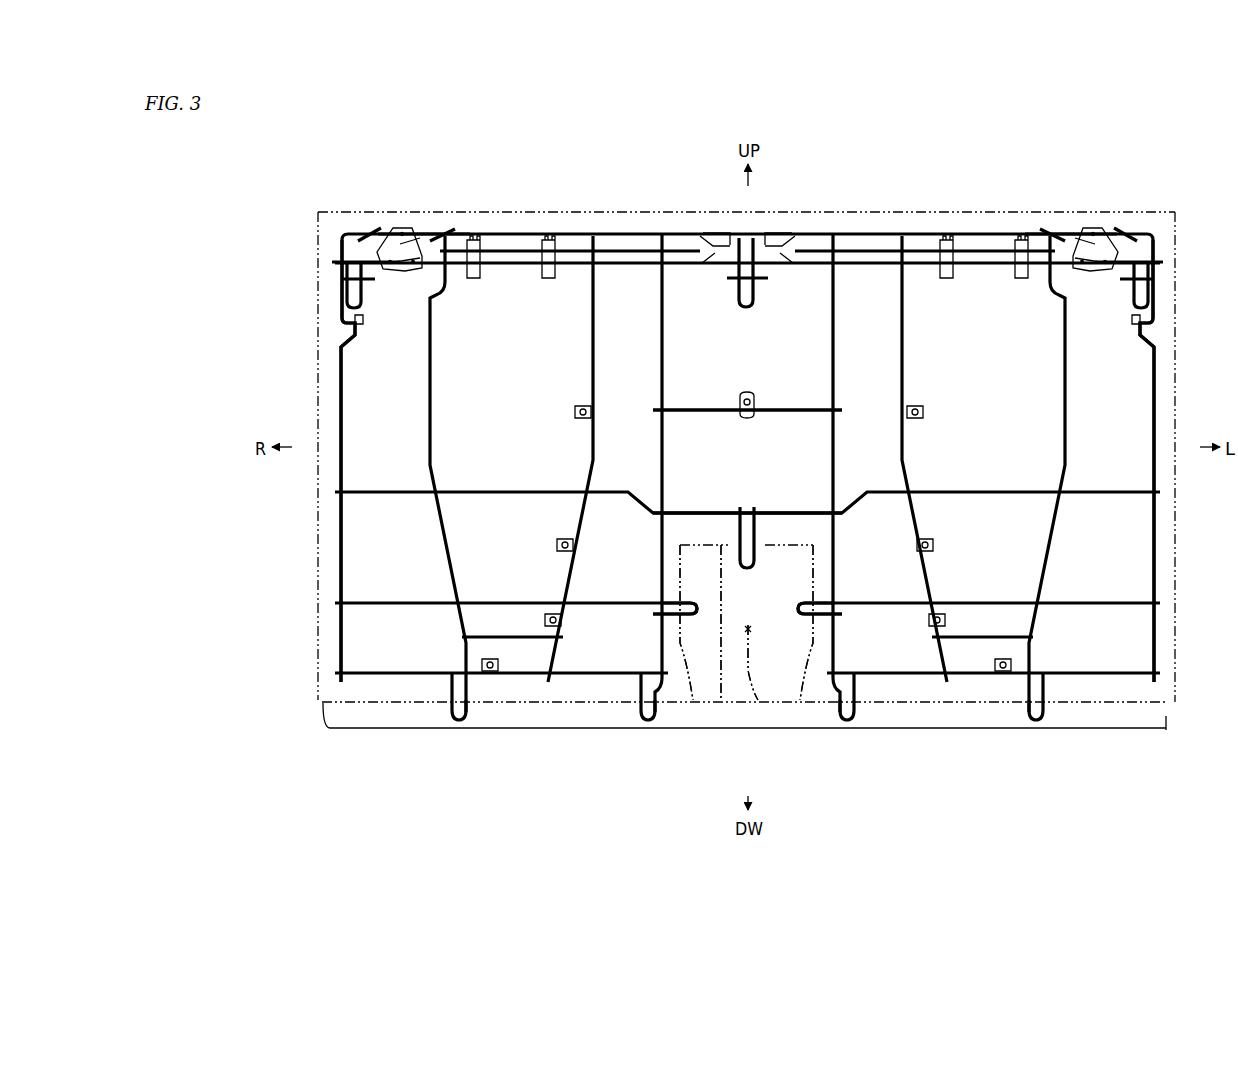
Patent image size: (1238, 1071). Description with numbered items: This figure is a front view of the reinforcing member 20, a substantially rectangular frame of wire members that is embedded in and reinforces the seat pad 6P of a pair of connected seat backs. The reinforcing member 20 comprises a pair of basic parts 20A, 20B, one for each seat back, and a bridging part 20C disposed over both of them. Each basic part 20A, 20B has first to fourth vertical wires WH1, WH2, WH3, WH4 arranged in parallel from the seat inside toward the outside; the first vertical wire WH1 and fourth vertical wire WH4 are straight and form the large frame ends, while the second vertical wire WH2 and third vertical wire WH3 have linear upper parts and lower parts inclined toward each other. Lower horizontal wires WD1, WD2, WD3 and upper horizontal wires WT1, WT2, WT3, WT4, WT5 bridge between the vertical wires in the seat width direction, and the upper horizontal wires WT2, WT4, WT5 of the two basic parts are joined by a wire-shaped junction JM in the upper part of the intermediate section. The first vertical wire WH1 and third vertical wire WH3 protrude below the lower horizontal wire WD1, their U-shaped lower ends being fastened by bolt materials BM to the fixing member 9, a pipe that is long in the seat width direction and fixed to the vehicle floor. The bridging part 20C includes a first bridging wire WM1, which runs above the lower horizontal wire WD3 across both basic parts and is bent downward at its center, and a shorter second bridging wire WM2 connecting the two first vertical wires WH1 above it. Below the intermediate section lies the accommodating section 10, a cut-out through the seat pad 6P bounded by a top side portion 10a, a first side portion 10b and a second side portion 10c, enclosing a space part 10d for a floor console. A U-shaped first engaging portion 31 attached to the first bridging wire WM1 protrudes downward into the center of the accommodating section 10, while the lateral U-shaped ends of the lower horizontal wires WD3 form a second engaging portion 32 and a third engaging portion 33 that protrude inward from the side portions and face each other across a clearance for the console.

The reinforcing member 20 is at (1049, 186).
The basic part 20A is at (1157, 375).
The basic part 20B is at (338, 375).
The bridging part 20C is at (788, 348).
The seat pad 6P is at (926, 210).
The fixing member 9 is at (1147, 718).
The accommodating section 10 is at (815, 767).
The top side portion 10a is at (722, 702).
The first side portion 10b is at (797, 702).
The second side portion 10c is at (693, 702).
The space part 10d is at (758, 702).
The first engaging portion 31 is at (745, 570).
The second engaging portion 32 is at (800, 601).
The third engaging portion 33 is at (694, 601).
The bolt material BM is at (1036, 750).
The junction JM is at (748, 234).
The first bridging wire WM1 is at (777, 511).
The second bridging wire WM2 is at (727, 404).
The first vertical wire WH1 is at (660, 390).
The second vertical wire WH2 is at (591, 390).
The third vertical wire WH3 is at (432, 390).
The fourth vertical wire WH4 is at (343, 402).
The lower horizontal wire WD1 is at (384, 671).
The lower horizontal wire WD2 is at (462, 636).
The lower horizontal wire WD3 is at (400, 601).
The upper horizontal wire WT1 is at (352, 283).
The upper horizontal wire WT2 is at (346, 267).
The upper horizontal wire WT3 is at (380, 249).
The upper horizontal wire WT4 is at (356, 232).
The upper horizontal wire WT5 is at (390, 232).